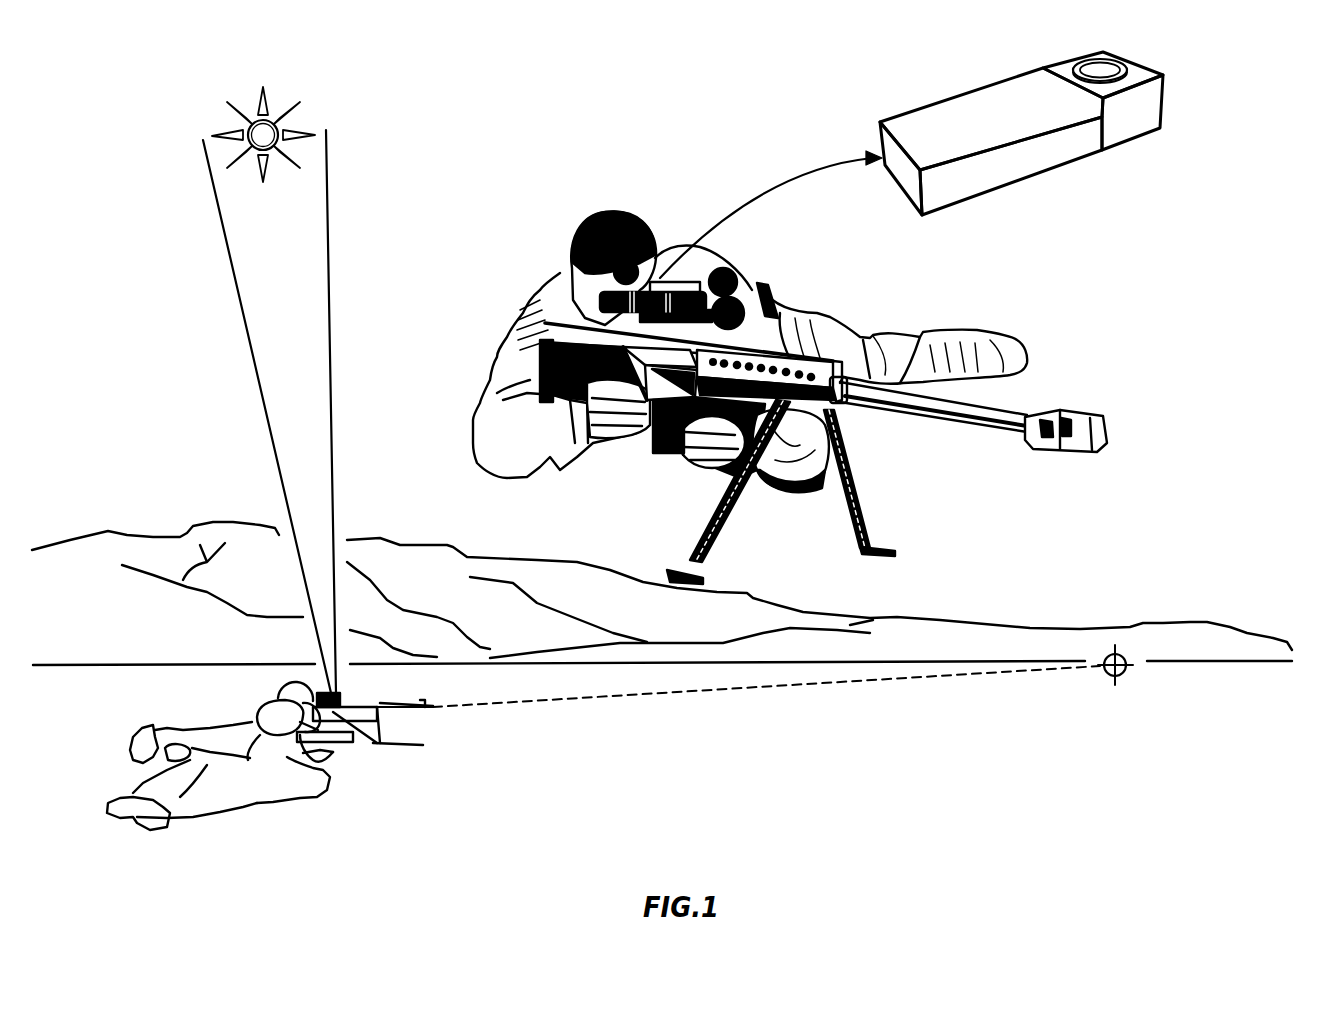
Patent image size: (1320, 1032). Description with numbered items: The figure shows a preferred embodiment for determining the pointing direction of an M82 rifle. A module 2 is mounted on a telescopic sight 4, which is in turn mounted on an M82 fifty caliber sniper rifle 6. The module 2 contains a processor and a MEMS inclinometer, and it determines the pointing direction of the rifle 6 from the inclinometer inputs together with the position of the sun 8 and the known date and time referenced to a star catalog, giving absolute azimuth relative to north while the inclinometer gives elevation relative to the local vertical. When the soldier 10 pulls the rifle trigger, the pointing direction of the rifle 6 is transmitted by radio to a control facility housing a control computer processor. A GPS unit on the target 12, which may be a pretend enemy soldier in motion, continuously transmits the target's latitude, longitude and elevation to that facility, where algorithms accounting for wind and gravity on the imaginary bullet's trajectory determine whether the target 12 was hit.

The module 2 is at (1062, 198).
The telescopic sight 4 is at (758, 294).
The sniper rifle 6 is at (927, 432).
The sun 8 is at (308, 114).
The soldier 10 is at (486, 345).
The target 12 is at (1106, 646).